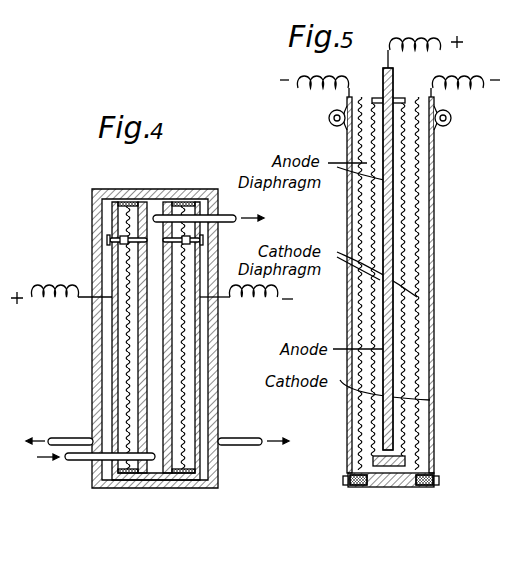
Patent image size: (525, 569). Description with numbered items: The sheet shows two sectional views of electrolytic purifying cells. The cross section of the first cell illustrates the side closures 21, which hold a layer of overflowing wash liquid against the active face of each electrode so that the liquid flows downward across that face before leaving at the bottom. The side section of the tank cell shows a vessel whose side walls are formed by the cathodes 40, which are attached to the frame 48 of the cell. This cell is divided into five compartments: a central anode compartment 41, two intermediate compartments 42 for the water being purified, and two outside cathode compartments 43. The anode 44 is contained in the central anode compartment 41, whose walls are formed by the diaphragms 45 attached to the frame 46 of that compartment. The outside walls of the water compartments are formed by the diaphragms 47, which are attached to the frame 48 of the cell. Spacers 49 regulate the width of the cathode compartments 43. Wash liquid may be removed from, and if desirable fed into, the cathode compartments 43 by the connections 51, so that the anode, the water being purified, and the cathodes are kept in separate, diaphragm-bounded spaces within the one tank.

In FIG. 4, the side closures 21 is at (185, 202).
In FIG. 5, the cathodes 40 is at (352, 365).
In FIG. 5, the central anode compartment 41 is at (398, 157).
In FIG. 5, the intermediate compartments 42 is at (408, 186).
In FIG. 5, the outside cathode compartments 43 is at (422, 215).
In FIG. 5, the anode 44 is at (393, 307).
In FIG. 5, the diaphragms 45 is at (408, 242).
In FIG. 5, the frame 46 is at (396, 488).
In FIG. 5, the diaphragms 47 is at (418, 273).
In FIG. 5, the frame 48 is at (377, 488).
In FIG. 5, the spacers 49 is at (354, 488).
In FIG. 5, the connections 51 is at (329, 118).